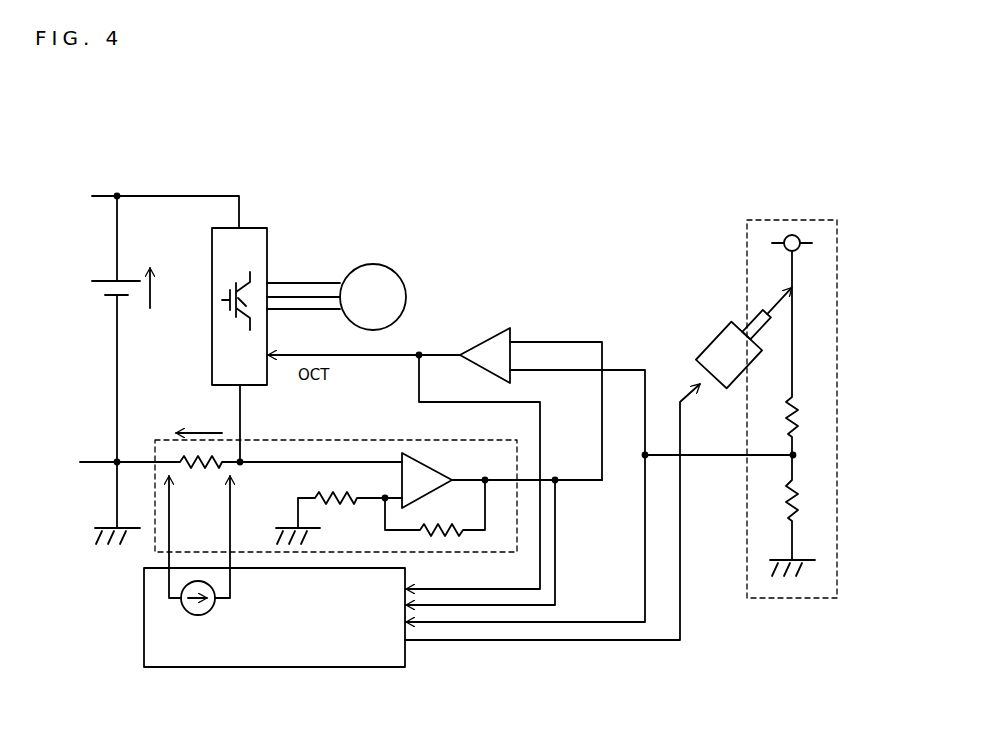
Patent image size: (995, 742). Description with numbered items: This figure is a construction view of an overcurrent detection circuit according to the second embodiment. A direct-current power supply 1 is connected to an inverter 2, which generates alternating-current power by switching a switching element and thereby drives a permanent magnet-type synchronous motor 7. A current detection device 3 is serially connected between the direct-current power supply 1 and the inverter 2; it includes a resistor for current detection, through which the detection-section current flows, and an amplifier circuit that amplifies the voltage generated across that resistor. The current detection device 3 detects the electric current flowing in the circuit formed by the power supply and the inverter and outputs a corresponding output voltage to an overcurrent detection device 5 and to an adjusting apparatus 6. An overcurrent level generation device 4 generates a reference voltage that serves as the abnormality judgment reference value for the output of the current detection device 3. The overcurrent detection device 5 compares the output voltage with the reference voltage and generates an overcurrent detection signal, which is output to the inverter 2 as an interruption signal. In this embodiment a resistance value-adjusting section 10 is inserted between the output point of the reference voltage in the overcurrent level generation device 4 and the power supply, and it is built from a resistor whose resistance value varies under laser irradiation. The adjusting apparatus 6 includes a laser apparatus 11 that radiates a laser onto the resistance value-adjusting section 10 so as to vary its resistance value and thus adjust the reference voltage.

The direct-current power supply 1 is at (105, 282).
The inverter 2 is at (245, 228).
The current detection device 3 is at (155, 448).
The overcurrent level generation device 4 is at (828, 226).
The overcurrent detection device 5 is at (470, 340).
The adjusting apparatus 6 is at (152, 628).
The permanent magnet-type synchronous motor 7 is at (352, 268).
The resistance value-adjusting section 10 is at (834, 292).
The laser apparatus 11 is at (704, 350).